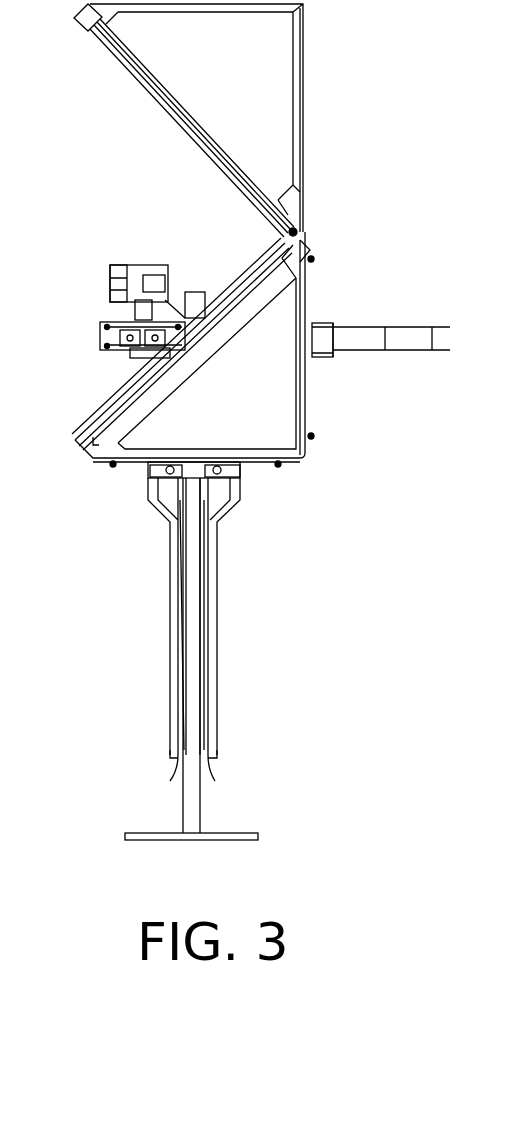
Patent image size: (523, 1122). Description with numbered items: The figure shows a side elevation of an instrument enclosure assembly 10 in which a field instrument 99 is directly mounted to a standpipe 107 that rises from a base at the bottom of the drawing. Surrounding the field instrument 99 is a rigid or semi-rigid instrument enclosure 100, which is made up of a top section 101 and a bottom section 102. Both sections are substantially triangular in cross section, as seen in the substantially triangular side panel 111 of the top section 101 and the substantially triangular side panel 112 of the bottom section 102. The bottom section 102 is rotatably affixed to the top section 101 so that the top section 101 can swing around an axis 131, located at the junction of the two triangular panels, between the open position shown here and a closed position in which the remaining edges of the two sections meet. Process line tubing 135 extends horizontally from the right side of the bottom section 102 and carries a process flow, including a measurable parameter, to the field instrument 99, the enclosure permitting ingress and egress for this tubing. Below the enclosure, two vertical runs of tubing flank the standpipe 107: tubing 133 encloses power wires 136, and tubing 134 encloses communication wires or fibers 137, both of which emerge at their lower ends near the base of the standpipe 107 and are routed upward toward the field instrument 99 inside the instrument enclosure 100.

The instrument enclosure 100 is at (243, 418).
The top section 101 is at (247, 120).
The bottom section 102 is at (250, 349).
The side panel 111 is at (234, 81).
The side panel 112 is at (219, 397).
The axis 131 is at (297, 231).
The process line tubing 135 is at (425, 350).
The field instrument 99 is at (77, 316).
The tubing 133 is at (170, 620).
The tubing 134 is at (217, 585).
The power wires 136 is at (174, 762).
The communication wires or fibers 137 is at (212, 760).
The standpipe 107 is at (200, 787).
The instrument enclosure assembly 10 is at (225, 825).